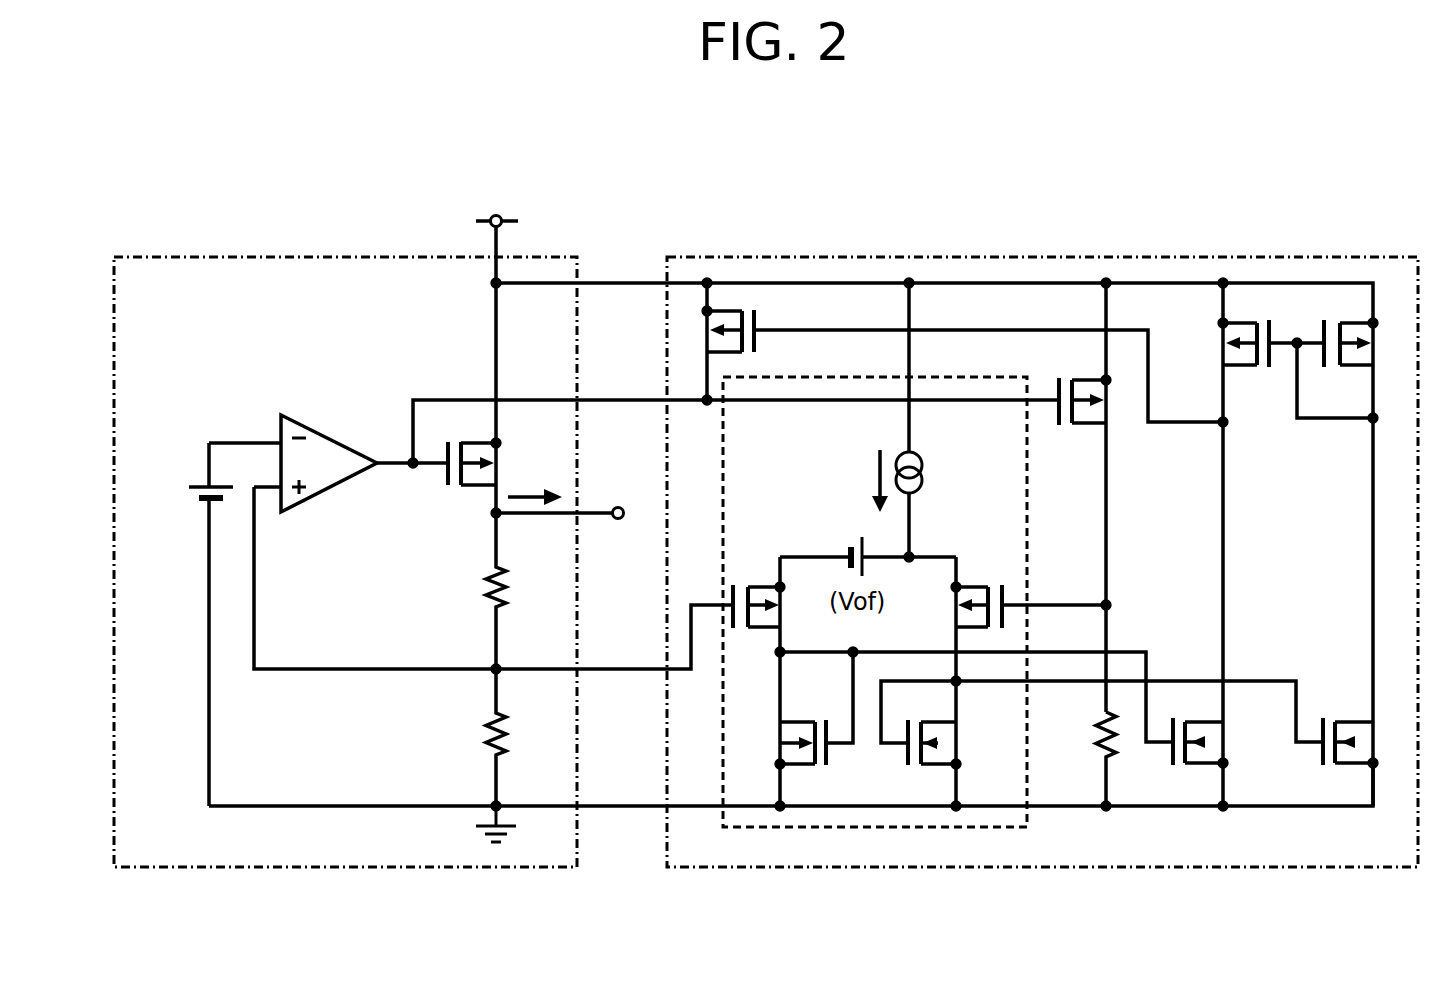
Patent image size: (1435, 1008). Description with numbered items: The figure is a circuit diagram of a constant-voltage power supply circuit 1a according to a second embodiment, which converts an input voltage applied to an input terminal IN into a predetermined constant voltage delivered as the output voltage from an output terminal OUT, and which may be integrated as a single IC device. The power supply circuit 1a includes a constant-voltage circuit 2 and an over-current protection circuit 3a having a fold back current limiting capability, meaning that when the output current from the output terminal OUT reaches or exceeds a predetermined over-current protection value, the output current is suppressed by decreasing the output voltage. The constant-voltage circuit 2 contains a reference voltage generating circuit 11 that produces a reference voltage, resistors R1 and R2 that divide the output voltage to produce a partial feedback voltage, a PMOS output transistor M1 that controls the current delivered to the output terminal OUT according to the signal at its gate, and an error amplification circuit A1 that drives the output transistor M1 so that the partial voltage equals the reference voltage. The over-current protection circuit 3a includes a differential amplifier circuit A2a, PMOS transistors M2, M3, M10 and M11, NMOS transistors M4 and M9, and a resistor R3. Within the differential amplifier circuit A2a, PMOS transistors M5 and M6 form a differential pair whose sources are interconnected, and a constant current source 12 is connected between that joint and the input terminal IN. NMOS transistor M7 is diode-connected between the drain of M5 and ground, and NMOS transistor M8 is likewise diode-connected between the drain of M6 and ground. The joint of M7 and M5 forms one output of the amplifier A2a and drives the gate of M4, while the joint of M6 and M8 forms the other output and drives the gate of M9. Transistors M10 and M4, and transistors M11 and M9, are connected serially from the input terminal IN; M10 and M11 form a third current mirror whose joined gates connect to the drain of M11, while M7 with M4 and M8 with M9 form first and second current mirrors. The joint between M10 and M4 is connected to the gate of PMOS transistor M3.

The constant-voltage power supply circuit 1a is at (738, 183).
The constant-voltage circuit 2 is at (298, 243).
The over-current protection circuit 3a is at (864, 243).
The differential amplifier circuit A2a is at (712, 705).
The reference voltage generating circuit 11 is at (186, 500).
The constant current source 12 is at (922, 462).
The error amplification circuit A1 is at (656, 534).
The input terminal IN is at (503, 222).
The output terminal OUT is at (618, 519).
The output transistor M1 is at (471, 449).
The PMOS transistor M2 is at (1084, 495).
The PMOS transistor M3 is at (962, 350).
The NMOS transistor M4 is at (1200, 751).
The PMOS transistor M5 is at (759, 682).
The PMOS transistor M6 is at (1031, 682).
The NMOS transistor M7 is at (976, 706).
The NMOS transistor M8 is at (1102, 723).
The NMOS transistor M9 is at (1348, 749).
The PMOS transistor M10 is at (1295, 500).
The PMOS transistor M11 is at (1345, 507).
The resistor R1 is at (474, 591).
The resistor R2 is at (477, 755).
The resistor R3 is at (1084, 761).